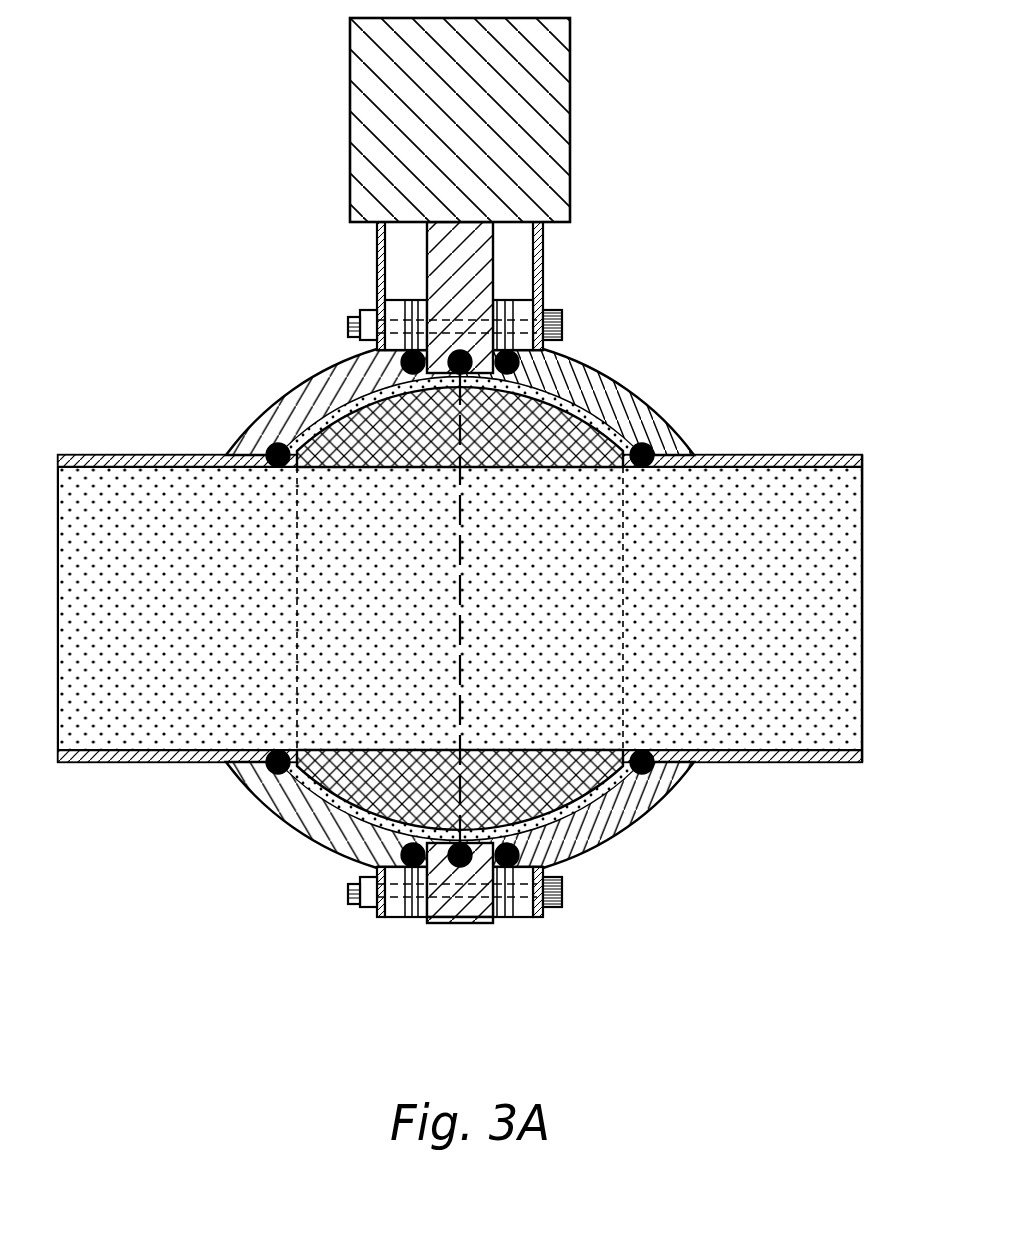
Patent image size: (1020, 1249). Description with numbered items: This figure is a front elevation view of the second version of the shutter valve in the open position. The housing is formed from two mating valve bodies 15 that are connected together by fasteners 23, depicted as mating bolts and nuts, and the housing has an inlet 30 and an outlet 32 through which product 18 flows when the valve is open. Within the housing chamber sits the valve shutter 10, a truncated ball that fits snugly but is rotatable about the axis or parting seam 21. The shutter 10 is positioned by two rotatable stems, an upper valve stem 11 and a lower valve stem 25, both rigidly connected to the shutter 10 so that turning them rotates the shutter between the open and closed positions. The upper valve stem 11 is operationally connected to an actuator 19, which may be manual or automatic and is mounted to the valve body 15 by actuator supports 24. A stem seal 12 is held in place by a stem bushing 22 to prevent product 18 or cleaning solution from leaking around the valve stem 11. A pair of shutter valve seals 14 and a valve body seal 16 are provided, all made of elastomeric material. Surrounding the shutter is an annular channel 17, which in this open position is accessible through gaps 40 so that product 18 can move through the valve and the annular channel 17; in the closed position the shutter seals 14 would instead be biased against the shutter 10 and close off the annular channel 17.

The valve shutter 10 is at (395, 435).
The upper valve stem 11 is at (427, 260).
The stem seal 12 is at (355, 363).
The shutter valve seals 14 is at (275, 446).
The valve body 15 is at (633, 410).
The valve body seal 16 is at (438, 862).
The annular channel 17 is at (597, 413).
The product 18 is at (723, 570).
The actuator 19 is at (531, 97).
The axis/parting seam 21 is at (460, 793).
The stem bushing 22 is at (507, 299).
The fasteners 23 is at (563, 323).
The actuator supports 24 is at (543, 280).
The lower valve stem 25 is at (478, 922).
The inlet 30 is at (58, 574).
The outlet 32 is at (862, 573).
The gaps 40 is at (290, 470).